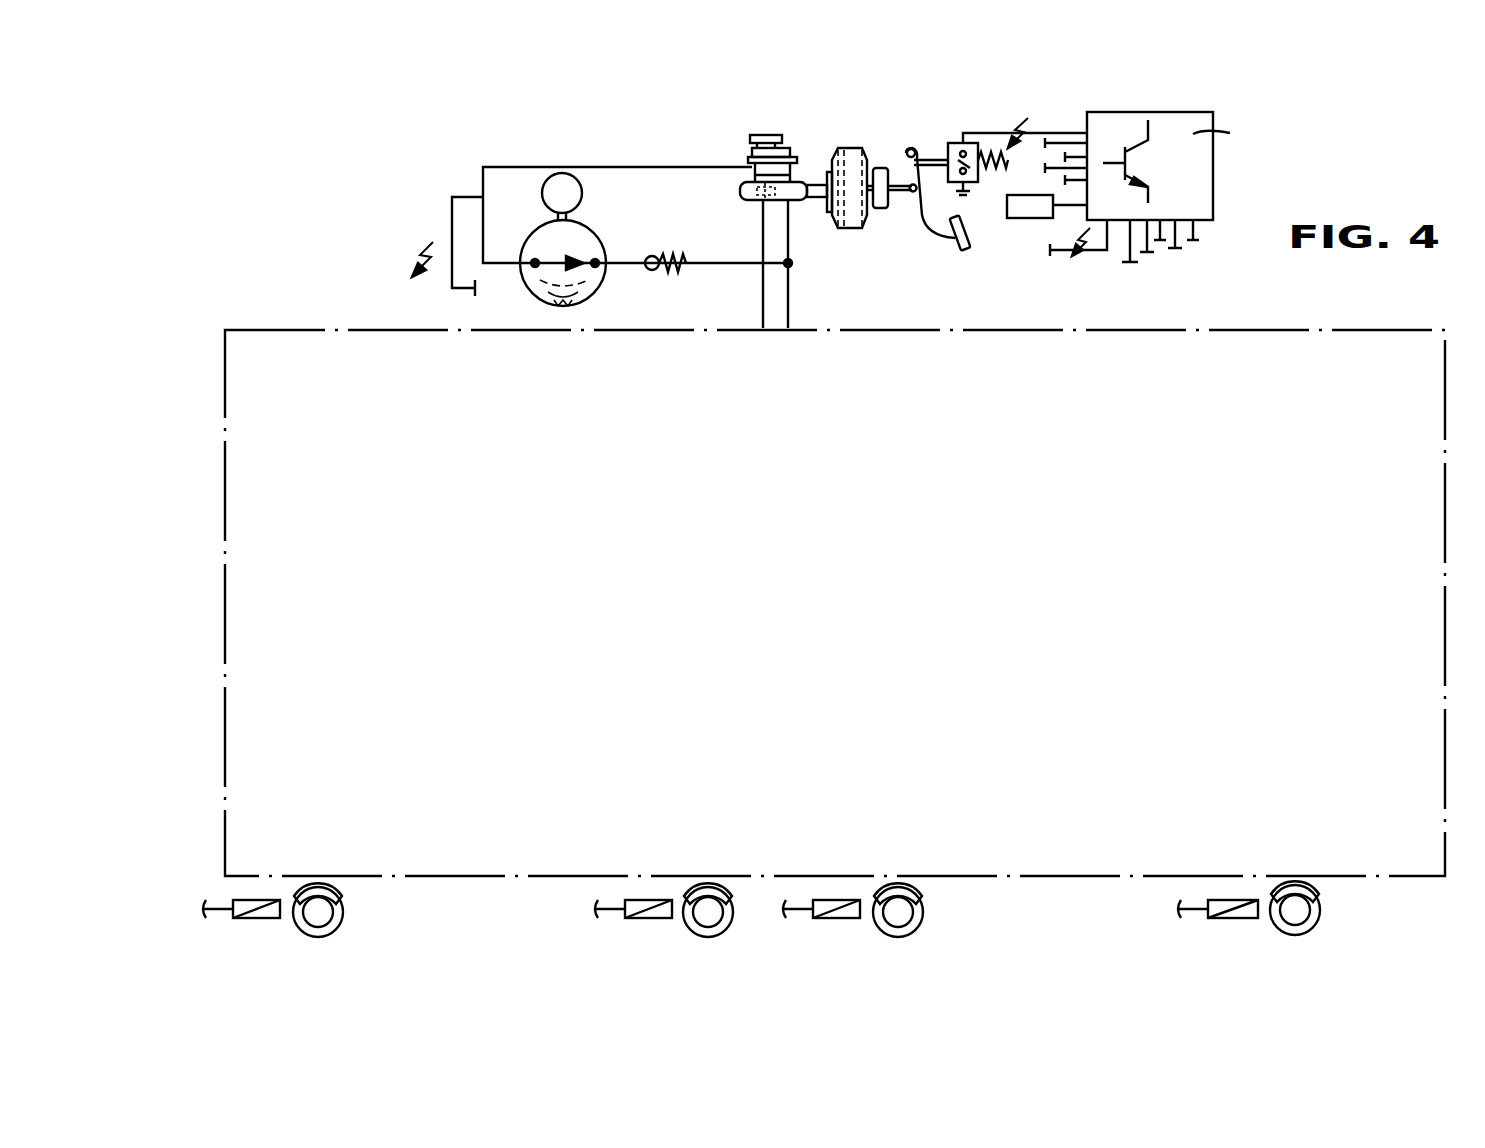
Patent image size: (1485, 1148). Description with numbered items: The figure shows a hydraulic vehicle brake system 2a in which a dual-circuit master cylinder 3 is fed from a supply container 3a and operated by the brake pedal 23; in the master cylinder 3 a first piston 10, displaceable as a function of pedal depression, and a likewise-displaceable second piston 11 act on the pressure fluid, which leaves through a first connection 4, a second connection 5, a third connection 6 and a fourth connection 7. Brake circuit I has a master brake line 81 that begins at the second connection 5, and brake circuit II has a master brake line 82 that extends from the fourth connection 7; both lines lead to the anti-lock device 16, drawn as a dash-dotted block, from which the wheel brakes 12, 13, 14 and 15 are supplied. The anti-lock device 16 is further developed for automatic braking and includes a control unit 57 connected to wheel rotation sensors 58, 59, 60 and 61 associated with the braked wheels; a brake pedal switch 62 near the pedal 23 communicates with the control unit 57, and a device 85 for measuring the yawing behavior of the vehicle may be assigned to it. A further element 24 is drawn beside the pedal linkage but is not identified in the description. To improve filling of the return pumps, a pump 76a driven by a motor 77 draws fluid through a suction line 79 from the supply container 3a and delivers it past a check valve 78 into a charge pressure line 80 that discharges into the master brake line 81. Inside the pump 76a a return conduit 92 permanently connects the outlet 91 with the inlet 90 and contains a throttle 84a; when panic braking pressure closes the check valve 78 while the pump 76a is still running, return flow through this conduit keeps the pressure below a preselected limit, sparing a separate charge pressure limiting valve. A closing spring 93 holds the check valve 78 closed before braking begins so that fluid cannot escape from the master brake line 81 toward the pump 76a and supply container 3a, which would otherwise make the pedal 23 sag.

The hydraulic vehicle brake system 2a is at (472, 186).
The master cylinder 3 is at (822, 212).
The supply container 3a is at (790, 150).
The first connection 4 is at (812, 166).
The second connection 5 is at (790, 203).
The third connection 6 is at (750, 180).
The fourth connection 7 is at (760, 202).
The first piston 10 is at (830, 152).
The second piston 11 is at (760, 135).
The wheel brake 12 is at (1305, 890).
The wheel brake 13 is at (910, 890).
The wheel brake 14 is at (700, 892).
The wheel brake 15 is at (313, 893).
The anti-lock device 16 is at (276, 330).
The brake pedal 23 is at (968, 231).
The push rod 24 is at (868, 220).
The control unit 57 is at (1208, 127).
The wheel rotation sensor 58 is at (1222, 898).
The wheel rotation sensor 59 is at (835, 900).
The wheel rotation sensor 60 is at (634, 900).
The wheel rotation sensor 61 is at (242, 900).
The brake pedal switch 62 is at (952, 143).
The pump 76a is at (527, 287).
The motor 77 is at (598, 193).
The check valve 78 is at (658, 272).
The suction line 79 is at (604, 167).
The charge pressure line 80 is at (787, 267).
The master brake line 81 is at (795, 256).
The master brake line 82 is at (763, 248).
The throttle 84a is at (560, 302).
The device for measuring the yawing behavior 85 is at (1028, 200).
The inlet 90 is at (522, 262).
The outlet 91 is at (607, 262).
The return conduit 92 is at (596, 292).
The closing spring 93 is at (684, 258).